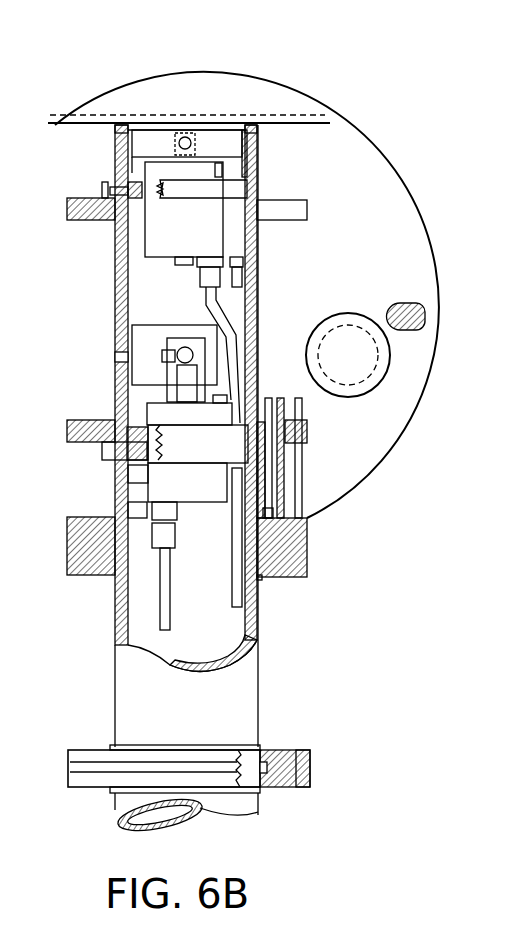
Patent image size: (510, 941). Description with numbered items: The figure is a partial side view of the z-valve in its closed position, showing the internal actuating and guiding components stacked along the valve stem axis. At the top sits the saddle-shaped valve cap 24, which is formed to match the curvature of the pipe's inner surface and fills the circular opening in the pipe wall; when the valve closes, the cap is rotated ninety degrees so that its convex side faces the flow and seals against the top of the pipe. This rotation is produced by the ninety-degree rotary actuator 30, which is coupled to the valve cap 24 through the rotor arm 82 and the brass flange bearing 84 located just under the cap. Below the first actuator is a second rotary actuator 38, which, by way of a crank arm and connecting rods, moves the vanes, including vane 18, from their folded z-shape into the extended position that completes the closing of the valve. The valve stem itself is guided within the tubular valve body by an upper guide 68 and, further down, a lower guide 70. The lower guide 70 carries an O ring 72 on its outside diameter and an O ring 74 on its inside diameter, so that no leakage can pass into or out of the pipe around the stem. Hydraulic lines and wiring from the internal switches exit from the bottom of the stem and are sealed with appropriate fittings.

The vane 18 is at (372, 233).
The valve cap 24 is at (237, 103).
The rotary actuator 30 is at (207, 210).
The rotary actuator 38 is at (205, 475).
The upper guide 68 is at (310, 545).
The lower guide 70 is at (294, 756).
The O ring 72 is at (309, 762).
The O ring 74 is at (268, 752).
The rotor arm 82 is at (186, 130).
The brass flange bearing 84 is at (121, 127).